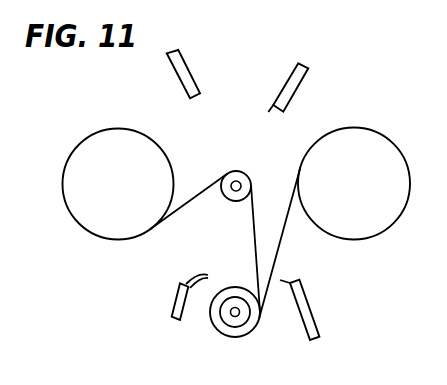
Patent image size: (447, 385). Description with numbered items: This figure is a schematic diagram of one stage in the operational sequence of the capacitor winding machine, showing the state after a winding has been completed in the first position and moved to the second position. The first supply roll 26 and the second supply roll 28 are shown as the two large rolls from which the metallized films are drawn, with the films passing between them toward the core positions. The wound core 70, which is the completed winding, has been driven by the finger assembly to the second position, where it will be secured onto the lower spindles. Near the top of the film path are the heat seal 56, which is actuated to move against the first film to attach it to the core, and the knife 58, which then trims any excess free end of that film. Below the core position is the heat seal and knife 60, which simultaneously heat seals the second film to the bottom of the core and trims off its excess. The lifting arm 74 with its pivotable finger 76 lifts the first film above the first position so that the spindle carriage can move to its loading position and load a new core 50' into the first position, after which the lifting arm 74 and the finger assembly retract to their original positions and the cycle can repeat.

The first supply roll 26 is at (106, 198).
The second supply roll 28 is at (343, 198).
The new core 50' is at (248, 170).
The heat seal 56 is at (182, 72).
The knife 58 is at (288, 80).
The heat seal and knife 60 is at (307, 313).
The wound core 70 is at (243, 332).
The lifting arm 74 is at (175, 302).
The pivotable finger 76 is at (198, 276).